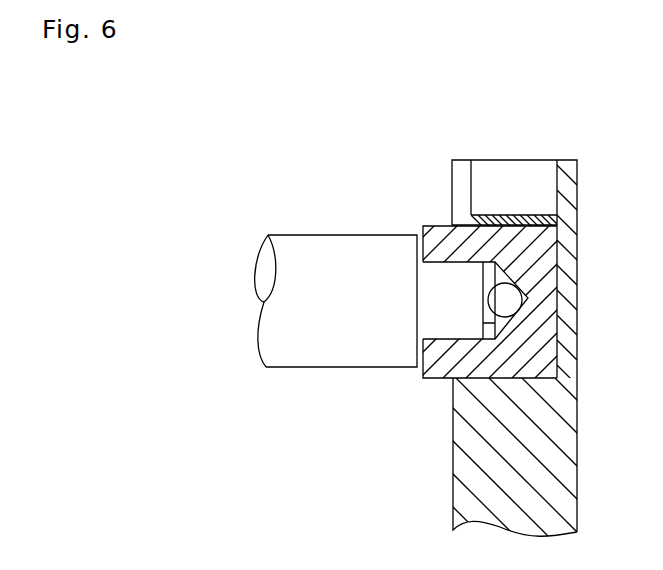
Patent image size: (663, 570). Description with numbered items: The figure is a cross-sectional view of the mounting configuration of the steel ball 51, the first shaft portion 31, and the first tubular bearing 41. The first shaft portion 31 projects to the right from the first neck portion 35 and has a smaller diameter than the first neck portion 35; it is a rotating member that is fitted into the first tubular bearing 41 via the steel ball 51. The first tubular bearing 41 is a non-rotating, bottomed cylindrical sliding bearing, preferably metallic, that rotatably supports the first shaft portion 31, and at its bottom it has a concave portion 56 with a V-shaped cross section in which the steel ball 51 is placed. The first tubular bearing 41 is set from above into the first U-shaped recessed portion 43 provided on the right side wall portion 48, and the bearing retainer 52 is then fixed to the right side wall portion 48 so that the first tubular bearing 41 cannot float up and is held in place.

The first neck portion 35 is at (368, 288).
The first shaft portion 31 is at (459, 290).
The bearing retainer 52 is at (510, 214).
The first U-shaped recessed portion 43 is at (557, 183).
The first tubular bearing 41 is at (550, 256).
The steel ball 51 is at (513, 294).
The concave portion 56 is at (423, 373).
The right side wall portion 48 is at (568, 447).